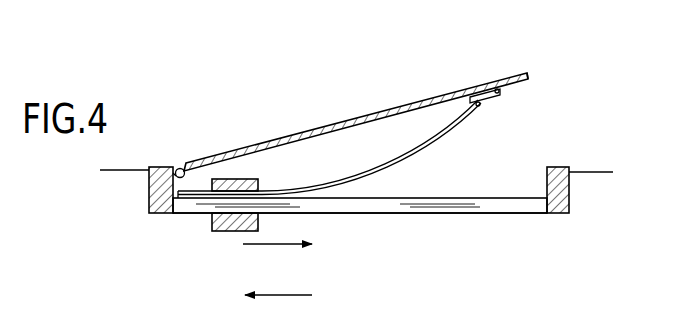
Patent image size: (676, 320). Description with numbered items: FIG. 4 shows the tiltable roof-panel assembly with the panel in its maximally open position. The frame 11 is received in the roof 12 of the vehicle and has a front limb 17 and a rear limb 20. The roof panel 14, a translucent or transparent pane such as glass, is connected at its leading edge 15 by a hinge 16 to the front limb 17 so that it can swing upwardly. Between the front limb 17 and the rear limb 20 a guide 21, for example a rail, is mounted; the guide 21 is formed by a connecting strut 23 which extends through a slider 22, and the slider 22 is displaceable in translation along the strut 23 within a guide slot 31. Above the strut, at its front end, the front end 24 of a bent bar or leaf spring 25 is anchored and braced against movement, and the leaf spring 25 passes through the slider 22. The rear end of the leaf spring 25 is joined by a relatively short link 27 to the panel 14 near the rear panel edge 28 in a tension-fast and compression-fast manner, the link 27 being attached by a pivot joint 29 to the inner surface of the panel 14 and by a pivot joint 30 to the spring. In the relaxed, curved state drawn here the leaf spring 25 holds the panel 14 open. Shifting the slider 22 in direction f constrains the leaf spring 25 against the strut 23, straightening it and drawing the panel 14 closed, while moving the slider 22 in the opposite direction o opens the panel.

The frame 11 is at (573, 215).
The roof 12 is at (590, 172).
The roof panel 14 is at (350, 116).
The leading edge 15 is at (180, 168).
The hinge 16 is at (176, 170).
The front limb 17 is at (149, 193).
The rear limb 20 is at (560, 189).
The guide 21 is at (517, 214).
The slider 22 is at (220, 233).
The connecting strut 23 is at (457, 215).
The front end of bent bar 24 is at (185, 197).
The leaf spring 25 is at (389, 173).
The link 27 is at (489, 104).
The rear panel edge 28 is at (530, 72).
The pivot joint 29 is at (499, 92).
The pivot joint 30 is at (478, 98).
The guide slot 31 is at (246, 178).
The closing direction f is at (266, 245).
The opening direction o is at (288, 295).